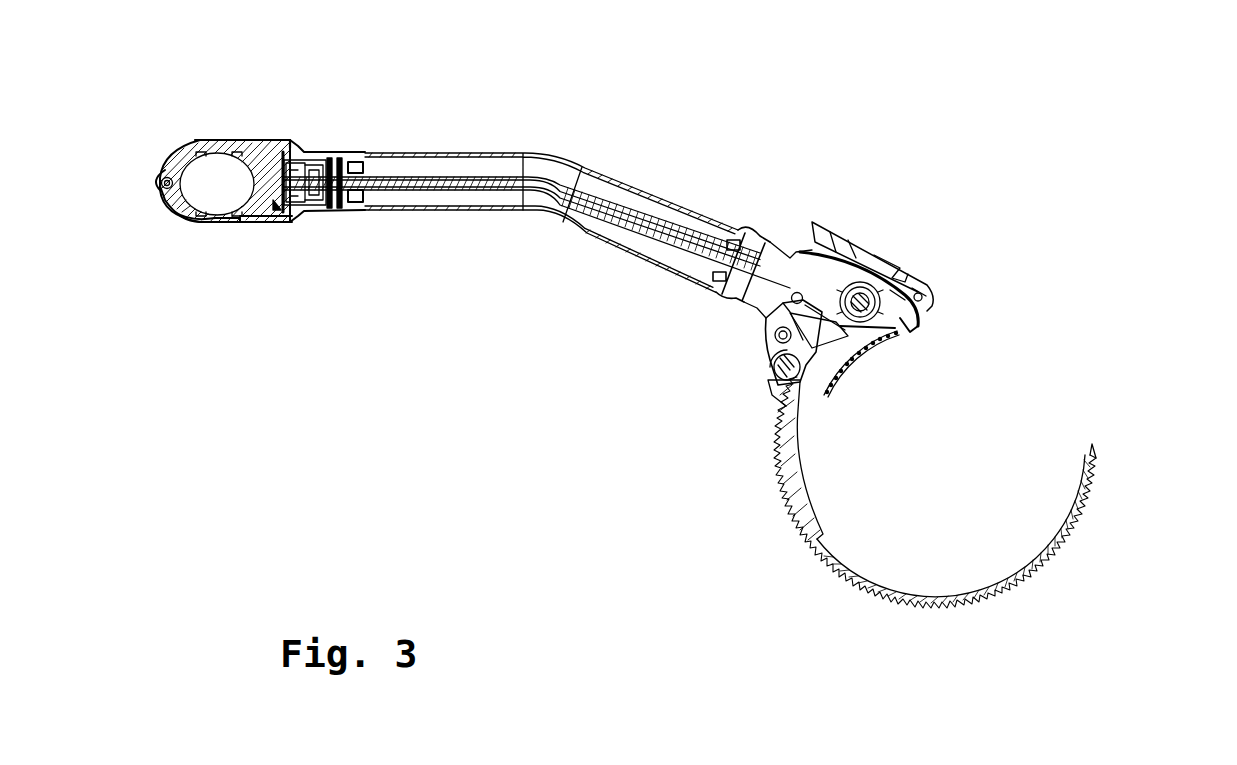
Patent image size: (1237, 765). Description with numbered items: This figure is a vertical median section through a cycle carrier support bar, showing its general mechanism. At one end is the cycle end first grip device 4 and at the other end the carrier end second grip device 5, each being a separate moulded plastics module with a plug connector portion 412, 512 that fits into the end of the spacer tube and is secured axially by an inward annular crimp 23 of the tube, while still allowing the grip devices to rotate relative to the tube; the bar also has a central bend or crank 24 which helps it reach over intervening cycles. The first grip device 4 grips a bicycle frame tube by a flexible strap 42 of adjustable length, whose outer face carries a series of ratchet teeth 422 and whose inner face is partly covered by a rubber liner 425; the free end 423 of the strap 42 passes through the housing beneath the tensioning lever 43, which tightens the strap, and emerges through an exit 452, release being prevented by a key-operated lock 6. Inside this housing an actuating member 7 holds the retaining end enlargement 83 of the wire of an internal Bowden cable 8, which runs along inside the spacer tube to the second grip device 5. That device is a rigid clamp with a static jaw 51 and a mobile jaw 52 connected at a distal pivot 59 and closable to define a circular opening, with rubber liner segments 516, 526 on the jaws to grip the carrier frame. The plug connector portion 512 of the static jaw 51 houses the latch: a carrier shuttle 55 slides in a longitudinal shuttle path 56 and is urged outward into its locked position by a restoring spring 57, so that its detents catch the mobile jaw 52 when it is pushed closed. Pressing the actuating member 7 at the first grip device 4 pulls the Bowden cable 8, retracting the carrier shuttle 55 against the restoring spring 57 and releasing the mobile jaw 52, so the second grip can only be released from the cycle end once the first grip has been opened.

The first grip device 4 is at (713, 375).
The plug connector portion 412 is at (716, 290).
The flexible strap 42 is at (928, 596).
The ratchet teeth 422 is at (970, 600).
The free end of the strap 423 is at (1098, 452).
The rubber liner 425 is at (797, 470).
The tensioning lever 43 is at (872, 242).
The exit 452 is at (786, 363).
The second grip device 5 is at (223, 309).
The static jaw 51 is at (202, 224).
The plug connector portion 512 is at (353, 163).
The rubber liner segment 516 is at (196, 210).
The mobile jaw 52 is at (237, 138).
The rubber liner segment 526 is at (204, 157).
The carrier shuttle 55 is at (296, 167).
The shuttle path 56 is at (306, 212).
The restoring spring 57 is at (322, 214).
The distal pivot 59 is at (161, 183).
The key-operated lock 6 is at (862, 302).
The actuating member 7 is at (790, 318).
The Bowden cable 8 is at (637, 186).
The retaining end enlargement 83 is at (275, 212).
The inward annular crimp 23 is at (340, 210).
The central bend or crank 24 is at (533, 212).